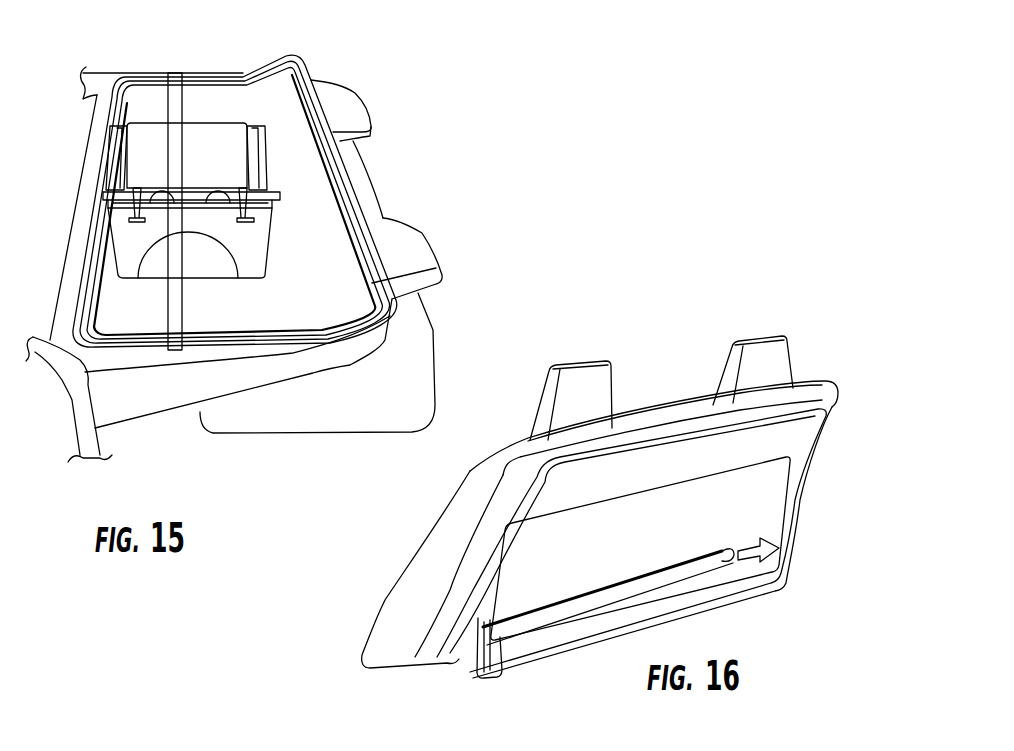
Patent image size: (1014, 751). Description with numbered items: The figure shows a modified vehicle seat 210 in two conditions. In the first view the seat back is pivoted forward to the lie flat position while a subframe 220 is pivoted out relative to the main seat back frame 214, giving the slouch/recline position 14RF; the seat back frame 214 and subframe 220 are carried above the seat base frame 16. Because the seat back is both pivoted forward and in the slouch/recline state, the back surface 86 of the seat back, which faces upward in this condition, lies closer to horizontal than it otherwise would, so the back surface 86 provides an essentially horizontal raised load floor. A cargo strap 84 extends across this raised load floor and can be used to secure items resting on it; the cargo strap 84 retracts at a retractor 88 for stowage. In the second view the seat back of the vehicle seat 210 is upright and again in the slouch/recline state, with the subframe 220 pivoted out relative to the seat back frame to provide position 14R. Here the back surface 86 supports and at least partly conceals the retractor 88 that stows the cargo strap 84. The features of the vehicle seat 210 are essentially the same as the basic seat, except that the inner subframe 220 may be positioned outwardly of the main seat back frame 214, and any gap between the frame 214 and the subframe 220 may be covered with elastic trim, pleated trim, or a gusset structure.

In FIG. 15, the slouch/recline position 14RF is at (372, 189).
In FIG. 16, the slouch/recline position 14R is at (827, 436).
In FIG. 15, the seat base frame 16 is at (288, 410).
In FIG. 15, the cargo strap 84 is at (180, 118).
In FIG. 15, the back surface 86 is at (245, 100).
In FIG. 16, the retractor 88 is at (498, 664).
In FIG. 15, the vehicle seat 210 is at (457, 124).
In FIG. 16, the vehicle seat 210 is at (732, 334).
In FIG. 15, the seat back frame 214 is at (233, 336).
In FIG. 16, the seat back frame 214 is at (803, 492).
In FIG. 15, the subframe 220 is at (212, 350).
In FIG. 16, the subframe 220 is at (410, 617).